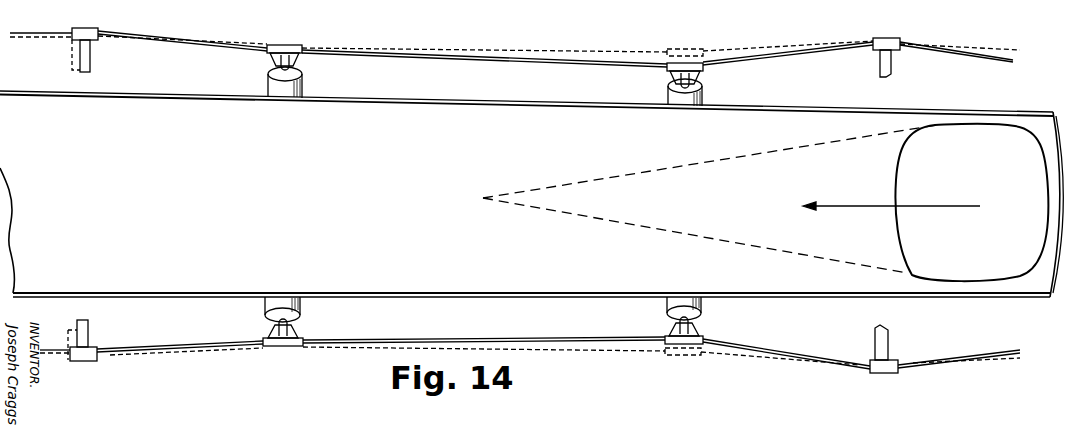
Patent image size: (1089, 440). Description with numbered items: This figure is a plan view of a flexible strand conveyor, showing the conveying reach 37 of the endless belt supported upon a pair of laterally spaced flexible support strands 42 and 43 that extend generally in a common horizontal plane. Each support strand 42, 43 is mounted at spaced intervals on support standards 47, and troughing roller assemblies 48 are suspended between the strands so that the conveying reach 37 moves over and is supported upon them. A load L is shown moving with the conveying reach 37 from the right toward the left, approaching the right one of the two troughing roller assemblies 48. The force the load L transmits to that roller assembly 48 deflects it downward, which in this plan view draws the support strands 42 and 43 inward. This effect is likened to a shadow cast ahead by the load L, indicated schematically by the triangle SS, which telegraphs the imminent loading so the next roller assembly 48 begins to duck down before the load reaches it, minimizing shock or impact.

The conveying reach 37 is at (224, 162).
The flexible support strand 42 is at (446, 338).
The flexible support strand 43 is at (396, 48).
The support standard 47 is at (91, 50).
The troughing roller assembly 48 is at (709, 89).
The shadow triangle SS is at (578, 183).
The load L is at (975, 180).